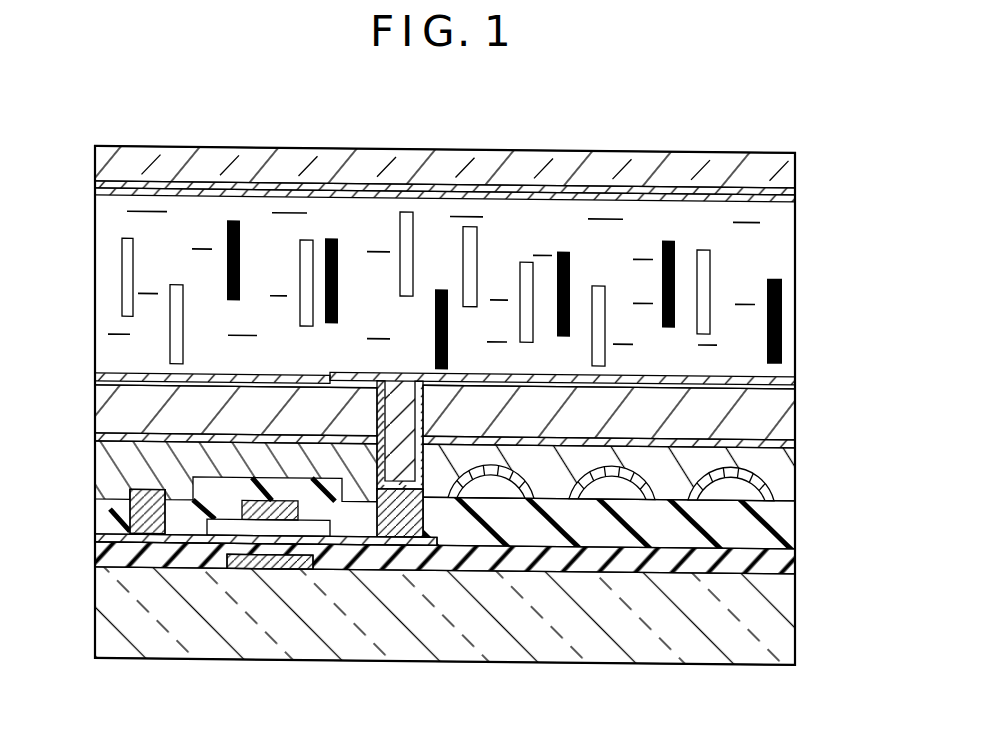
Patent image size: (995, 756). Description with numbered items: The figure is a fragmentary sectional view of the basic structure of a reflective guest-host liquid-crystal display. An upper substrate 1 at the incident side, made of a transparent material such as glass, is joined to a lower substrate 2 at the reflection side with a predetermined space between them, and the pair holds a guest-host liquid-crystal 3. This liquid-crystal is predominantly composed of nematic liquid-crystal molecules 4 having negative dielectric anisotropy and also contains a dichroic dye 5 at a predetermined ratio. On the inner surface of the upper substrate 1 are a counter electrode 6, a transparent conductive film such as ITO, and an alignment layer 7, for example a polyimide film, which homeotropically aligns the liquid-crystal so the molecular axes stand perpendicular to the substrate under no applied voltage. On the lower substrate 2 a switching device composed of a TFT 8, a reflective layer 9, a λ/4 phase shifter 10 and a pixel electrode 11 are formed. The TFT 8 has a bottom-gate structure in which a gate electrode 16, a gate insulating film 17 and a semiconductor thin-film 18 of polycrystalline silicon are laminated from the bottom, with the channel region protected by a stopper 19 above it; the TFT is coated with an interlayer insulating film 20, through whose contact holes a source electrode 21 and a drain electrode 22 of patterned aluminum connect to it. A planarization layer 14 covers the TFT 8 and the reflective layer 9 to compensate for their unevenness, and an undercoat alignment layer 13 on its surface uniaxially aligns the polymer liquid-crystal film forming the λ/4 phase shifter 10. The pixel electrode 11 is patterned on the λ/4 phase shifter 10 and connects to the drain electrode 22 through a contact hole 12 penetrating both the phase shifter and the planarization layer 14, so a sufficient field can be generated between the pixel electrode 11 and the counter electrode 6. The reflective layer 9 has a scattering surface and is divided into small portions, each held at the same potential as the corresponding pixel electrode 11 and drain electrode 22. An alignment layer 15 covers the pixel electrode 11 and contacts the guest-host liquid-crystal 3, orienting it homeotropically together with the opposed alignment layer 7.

The upper substrate 1 is at (790, 166).
The lower substrate 2 is at (773, 614).
The guest-host liquid-crystal 3 is at (776, 225).
The nematic liquid-crystal molecules 4 is at (120, 258).
The dichroic dye 5 is at (781, 279).
The counter electrode 6 is at (795, 175).
The alignment layer 7 is at (795, 191).
The TFT 8 is at (261, 571).
The reflective layer 9 is at (771, 475).
The λ/4 phase shifter 10 is at (782, 410).
The pixel electrode 11 is at (770, 384).
The contact hole 12 is at (374, 405).
The undercoat alignment layer 13 is at (797, 432).
The planarization layer 14 is at (780, 455).
The alignment layer 15 is at (773, 367).
The gate electrode 16 is at (298, 565).
The gate insulating film 17 is at (783, 555).
The semiconductor thin-film 18 is at (100, 544).
The stopper 19 is at (225, 473).
The interlayer insulating film 20 is at (783, 519).
The source electrode 21 is at (130, 512).
The drain electrode 22 is at (403, 518).